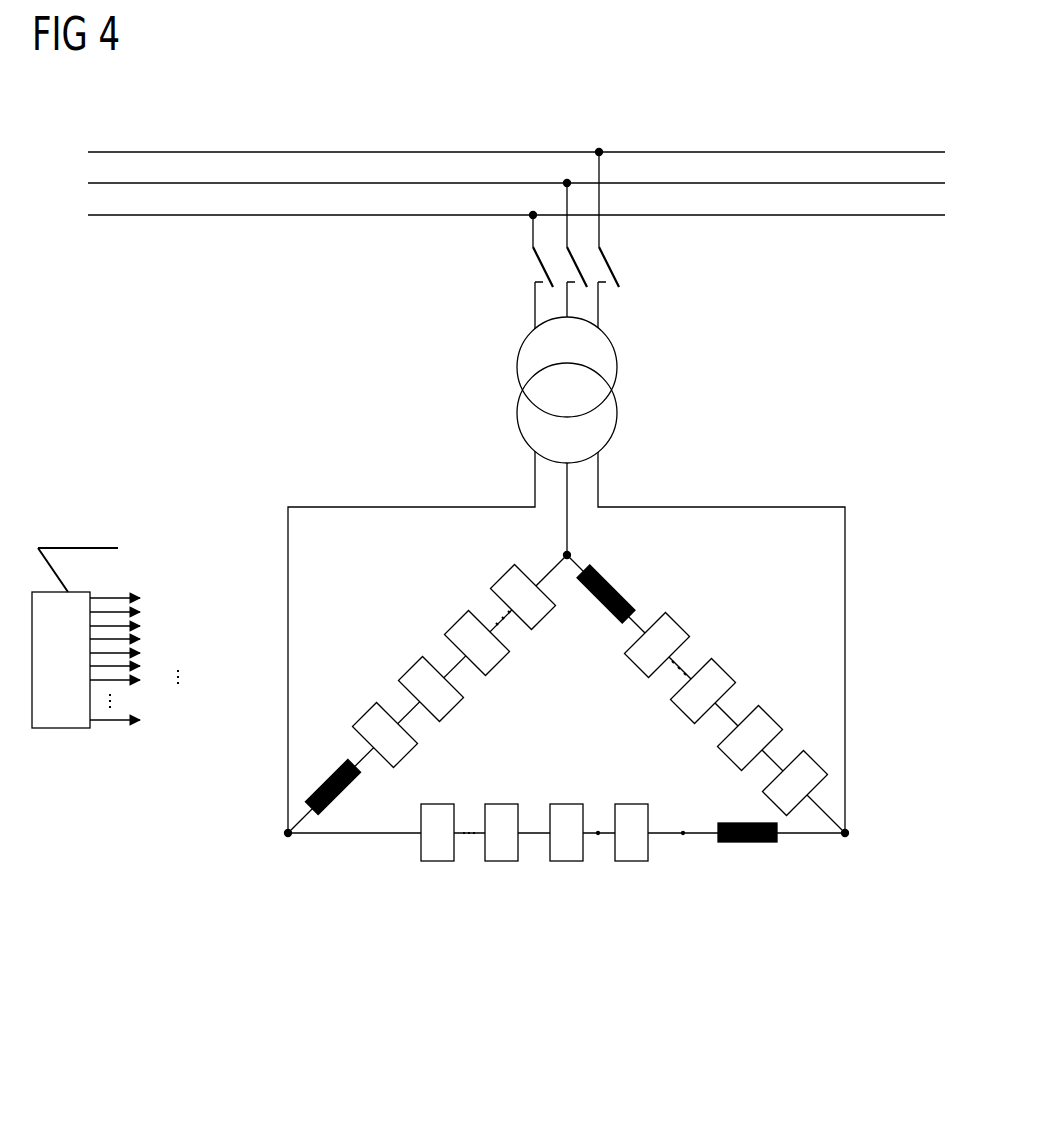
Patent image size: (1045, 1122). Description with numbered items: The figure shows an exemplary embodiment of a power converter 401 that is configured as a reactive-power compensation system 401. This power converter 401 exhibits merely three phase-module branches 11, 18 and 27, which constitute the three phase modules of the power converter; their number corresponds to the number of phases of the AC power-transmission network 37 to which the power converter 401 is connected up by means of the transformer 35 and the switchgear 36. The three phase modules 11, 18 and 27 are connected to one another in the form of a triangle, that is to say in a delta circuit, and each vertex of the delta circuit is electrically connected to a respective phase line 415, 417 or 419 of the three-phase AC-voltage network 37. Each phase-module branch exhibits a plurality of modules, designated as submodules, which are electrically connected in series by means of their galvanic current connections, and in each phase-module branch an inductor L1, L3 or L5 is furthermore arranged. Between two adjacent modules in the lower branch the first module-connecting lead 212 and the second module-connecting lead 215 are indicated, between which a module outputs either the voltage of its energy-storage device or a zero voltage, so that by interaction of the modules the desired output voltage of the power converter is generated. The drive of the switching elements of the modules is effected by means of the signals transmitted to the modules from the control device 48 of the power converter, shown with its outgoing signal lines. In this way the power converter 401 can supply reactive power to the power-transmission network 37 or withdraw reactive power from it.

The power-transmission network 37 is at (516, 159).
The phase line 415 is at (790, 151).
The phase line 417 is at (852, 182).
The phase line 419 is at (793, 216).
The switchgear 36 is at (608, 277).
The transformer 35 is at (618, 372).
The power converter 401 is at (842, 416).
The third phase-module branch 18 is at (427, 668).
The fifth phase-module branch 27 is at (706, 675).
The first phase-module branch 11 is at (566, 908).
The inductor L1 is at (750, 844).
The inductor L3 is at (326, 775).
The inductor L5 is at (615, 584).
The first module-connecting lead 212 is at (597, 830).
The second module-connecting lead 215 is at (684, 830).
The control device 48 is at (53, 777).